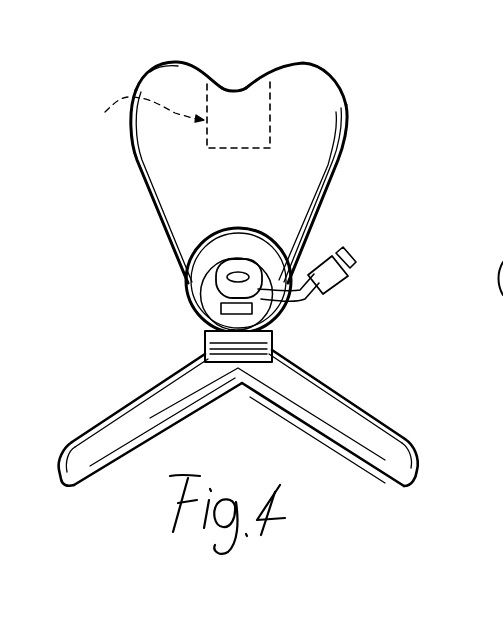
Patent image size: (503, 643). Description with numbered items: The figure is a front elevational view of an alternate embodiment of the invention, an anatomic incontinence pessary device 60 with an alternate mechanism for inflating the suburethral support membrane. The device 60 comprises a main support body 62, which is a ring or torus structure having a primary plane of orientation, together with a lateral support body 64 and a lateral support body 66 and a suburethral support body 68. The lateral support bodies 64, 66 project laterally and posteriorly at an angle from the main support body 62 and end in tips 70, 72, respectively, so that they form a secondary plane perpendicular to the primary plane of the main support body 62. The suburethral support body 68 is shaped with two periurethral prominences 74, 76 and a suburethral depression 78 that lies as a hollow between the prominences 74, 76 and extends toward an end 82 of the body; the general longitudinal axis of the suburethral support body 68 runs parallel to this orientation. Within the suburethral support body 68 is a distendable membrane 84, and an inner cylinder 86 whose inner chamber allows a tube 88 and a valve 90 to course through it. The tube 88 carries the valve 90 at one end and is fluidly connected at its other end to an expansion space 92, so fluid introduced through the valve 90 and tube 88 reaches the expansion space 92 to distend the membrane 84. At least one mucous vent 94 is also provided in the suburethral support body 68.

The anatomic incontinence pessary device 60 is at (373, 196).
The main support body 62 is at (200, 375).
The lateral support body 64 is at (107, 412).
The lateral support body 66 is at (368, 414).
The suburethral support body 68 is at (352, 105).
The tip 70 is at (60, 481).
The tip 72 is at (410, 488).
The periurethral prominence 74 is at (172, 61).
The periurethral prominence 76 is at (307, 63).
The suburethral depression 78 is at (243, 79).
The end 82 is at (196, 331).
The distendable membrane 84 is at (250, 135).
The inner cylinder 86 is at (280, 327).
The tube 88 is at (290, 303).
The valve 90 is at (330, 260).
The expansion space 92 is at (143, 114).
The mucous vent 94 is at (210, 305).